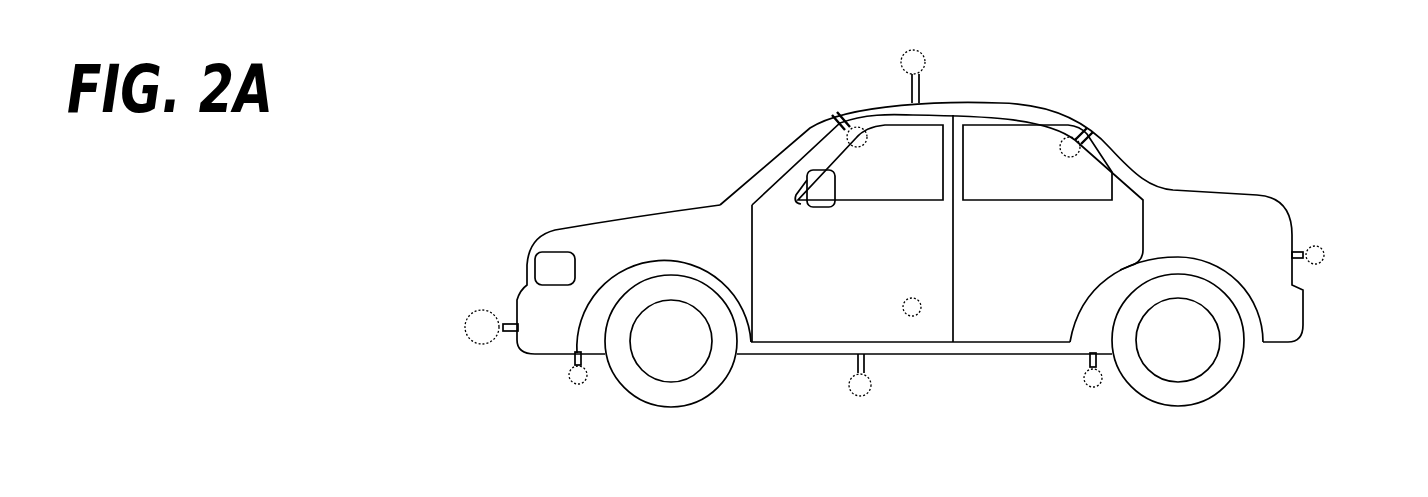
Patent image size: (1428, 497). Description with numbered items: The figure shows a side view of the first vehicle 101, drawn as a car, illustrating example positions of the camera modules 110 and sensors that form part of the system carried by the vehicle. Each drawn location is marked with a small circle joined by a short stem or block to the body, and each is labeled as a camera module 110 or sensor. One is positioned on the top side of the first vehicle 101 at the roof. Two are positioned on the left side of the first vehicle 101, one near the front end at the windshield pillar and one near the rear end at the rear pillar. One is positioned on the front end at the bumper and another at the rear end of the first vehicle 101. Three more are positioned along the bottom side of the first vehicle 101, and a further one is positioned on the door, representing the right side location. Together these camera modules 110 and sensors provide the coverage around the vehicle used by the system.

The first vehicle 101 is at (1231, 146).
The camera modules 110 is at (938, 229).